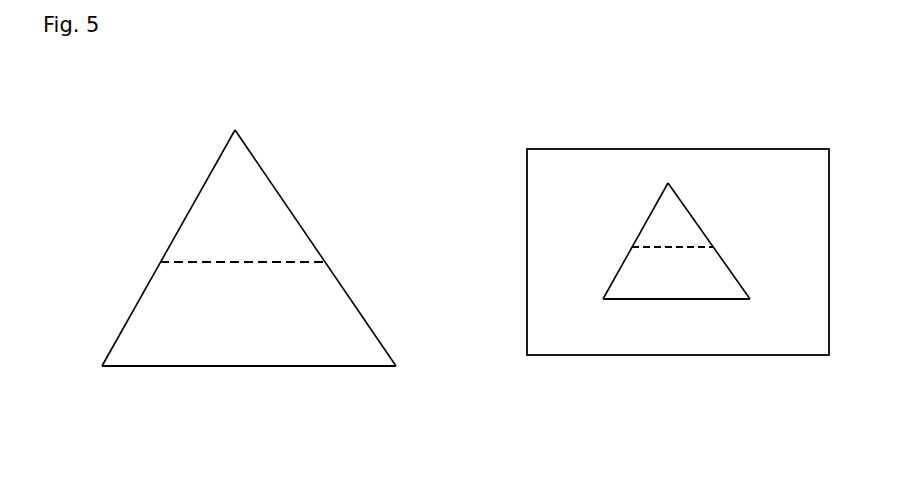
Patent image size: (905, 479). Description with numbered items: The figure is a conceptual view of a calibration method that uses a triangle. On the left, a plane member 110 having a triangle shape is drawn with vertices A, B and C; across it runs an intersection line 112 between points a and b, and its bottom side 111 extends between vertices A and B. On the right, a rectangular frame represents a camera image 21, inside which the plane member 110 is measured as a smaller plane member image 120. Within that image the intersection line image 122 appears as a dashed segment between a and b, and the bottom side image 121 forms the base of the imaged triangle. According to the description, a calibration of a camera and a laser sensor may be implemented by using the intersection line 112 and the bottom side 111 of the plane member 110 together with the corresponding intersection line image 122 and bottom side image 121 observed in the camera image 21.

The camera image 21 is at (749, 149).
The plane member 110 is at (291, 168).
The bottom side 111 is at (213, 367).
The intersection line 112 is at (193, 264).
The plane member image 120 is at (723, 312).
The bottom side image 121 is at (668, 300).
The intersection line image 122 is at (648, 248).